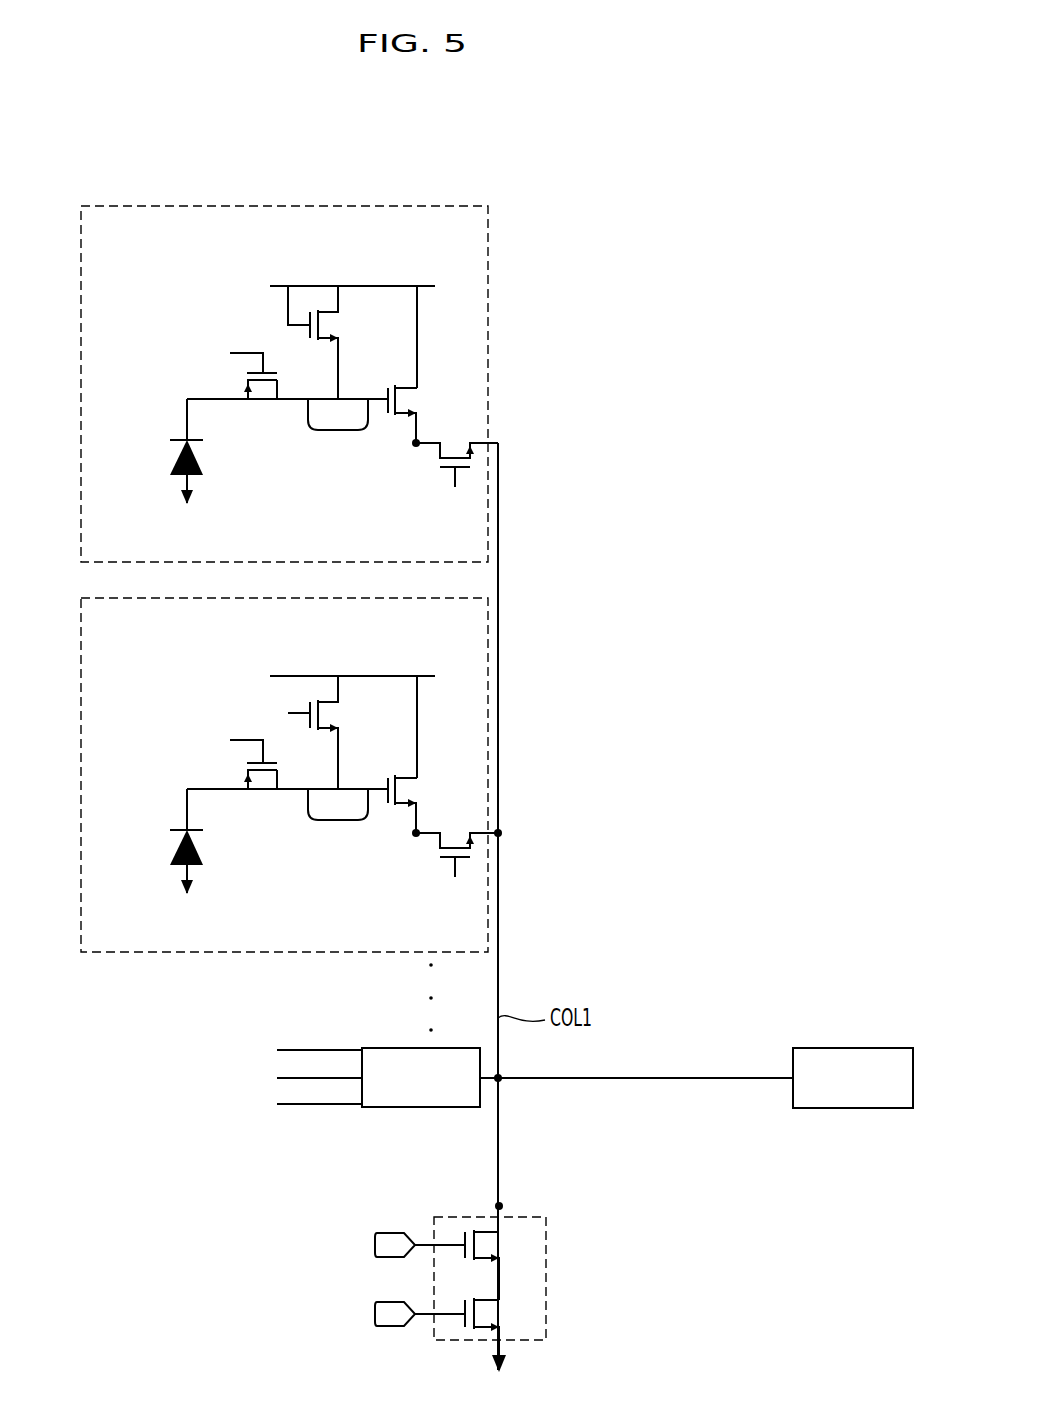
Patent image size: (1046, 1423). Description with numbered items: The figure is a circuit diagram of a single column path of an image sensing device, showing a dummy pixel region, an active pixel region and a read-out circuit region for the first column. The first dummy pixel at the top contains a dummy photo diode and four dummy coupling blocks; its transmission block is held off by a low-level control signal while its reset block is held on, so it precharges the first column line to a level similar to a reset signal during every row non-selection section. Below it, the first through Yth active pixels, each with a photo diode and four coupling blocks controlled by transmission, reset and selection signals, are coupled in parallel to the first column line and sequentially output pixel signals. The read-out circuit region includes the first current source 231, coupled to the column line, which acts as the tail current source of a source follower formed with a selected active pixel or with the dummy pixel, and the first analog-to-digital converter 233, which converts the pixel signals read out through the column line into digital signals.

The first current source 231 is at (546, 1277).
The first analog-to-digital converter 233 is at (865, 1048).